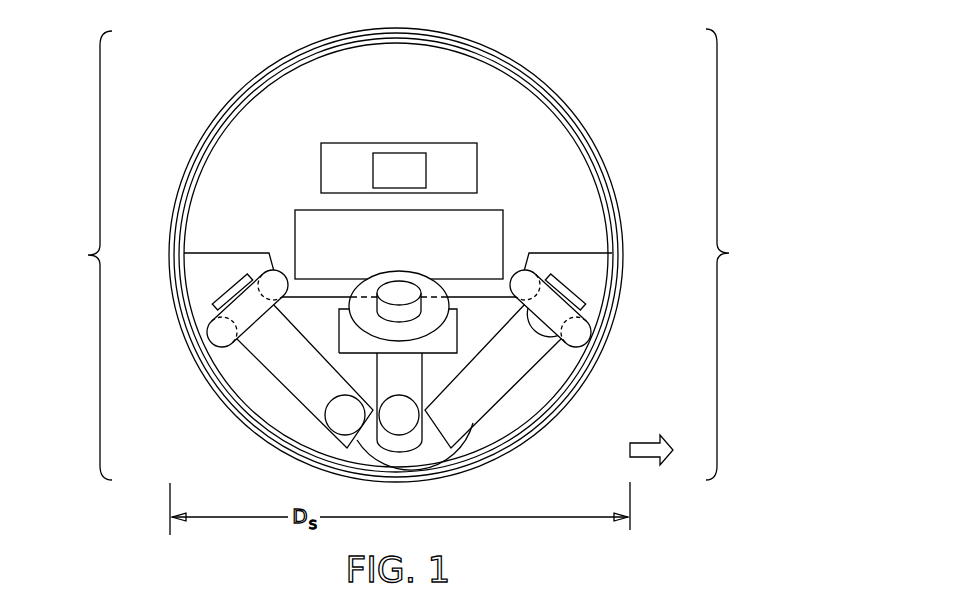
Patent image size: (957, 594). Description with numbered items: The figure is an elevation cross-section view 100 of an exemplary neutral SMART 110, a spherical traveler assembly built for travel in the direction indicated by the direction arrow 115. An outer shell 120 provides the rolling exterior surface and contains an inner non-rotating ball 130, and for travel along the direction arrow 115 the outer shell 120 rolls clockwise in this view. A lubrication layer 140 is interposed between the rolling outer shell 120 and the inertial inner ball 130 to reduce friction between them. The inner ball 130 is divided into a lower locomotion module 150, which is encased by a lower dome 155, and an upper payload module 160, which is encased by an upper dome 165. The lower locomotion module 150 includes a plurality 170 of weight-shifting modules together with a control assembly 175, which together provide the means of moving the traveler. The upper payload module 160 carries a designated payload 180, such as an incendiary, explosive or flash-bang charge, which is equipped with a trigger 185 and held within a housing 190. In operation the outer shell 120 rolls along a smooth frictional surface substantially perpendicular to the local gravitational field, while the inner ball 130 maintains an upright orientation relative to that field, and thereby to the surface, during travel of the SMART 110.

The elevation cross-section view 100 is at (752, 50).
The neutral SMART 110 is at (81, 255).
The direction arrow 115 is at (643, 458).
The outer shell 120 is at (516, 58).
The inner non-rotating ball 130 is at (734, 254).
The lubrication layer 140 is at (236, 402).
The lower locomotion module 150 is at (201, 276).
The lower dome 155 is at (590, 358).
The upper payload module 160 is at (383, 112).
The upper dome 165 is at (582, 137).
The plurality of weight-shifting modules 170 is at (399, 452).
The control assembly 175 is at (458, 320).
The designated payload 180 is at (385, 250).
The trigger 185 is at (385, 179).
The housing 190 is at (329, 179).